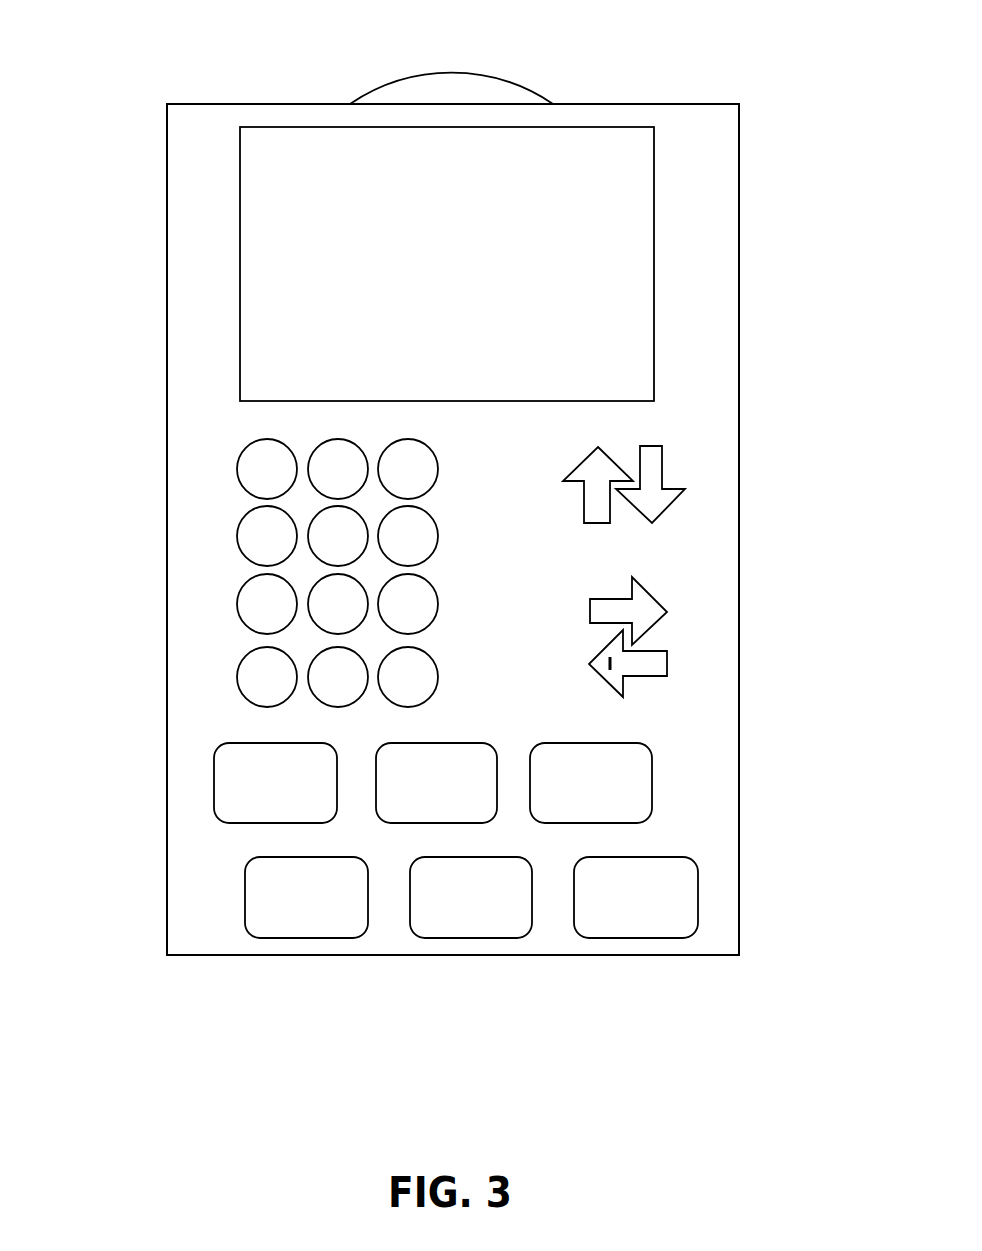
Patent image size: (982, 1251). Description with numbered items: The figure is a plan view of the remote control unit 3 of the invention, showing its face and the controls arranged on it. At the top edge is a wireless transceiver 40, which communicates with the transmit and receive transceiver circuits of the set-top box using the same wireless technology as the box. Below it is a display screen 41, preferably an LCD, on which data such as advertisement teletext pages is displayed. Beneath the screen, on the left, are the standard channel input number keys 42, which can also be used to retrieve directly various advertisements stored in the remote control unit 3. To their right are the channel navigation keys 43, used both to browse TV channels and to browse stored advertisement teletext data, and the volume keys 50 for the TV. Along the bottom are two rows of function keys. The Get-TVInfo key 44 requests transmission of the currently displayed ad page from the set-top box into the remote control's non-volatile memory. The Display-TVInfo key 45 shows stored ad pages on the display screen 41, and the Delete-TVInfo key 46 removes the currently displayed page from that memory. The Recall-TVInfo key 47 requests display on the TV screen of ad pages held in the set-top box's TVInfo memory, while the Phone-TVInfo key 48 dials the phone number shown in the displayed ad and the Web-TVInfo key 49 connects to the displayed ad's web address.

The remote control unit 3 is at (168, 108).
The wireless transceiver 40 is at (429, 90).
The display screen 41 is at (597, 181).
The channel input number keys 42 is at (215, 561).
The channel navigation keys 43 is at (680, 512).
The Get-TVInfo key 44 is at (232, 765).
The Display-TVInfo key 45 is at (391, 810).
The Delete-TVInfo key 46 is at (635, 773).
The Recall-TVInfo key 47 is at (255, 881).
The Phone-TVInfo key 48 is at (513, 918).
The Web-TVInfo key 49 is at (680, 916).
The volume keys 50 is at (685, 657).